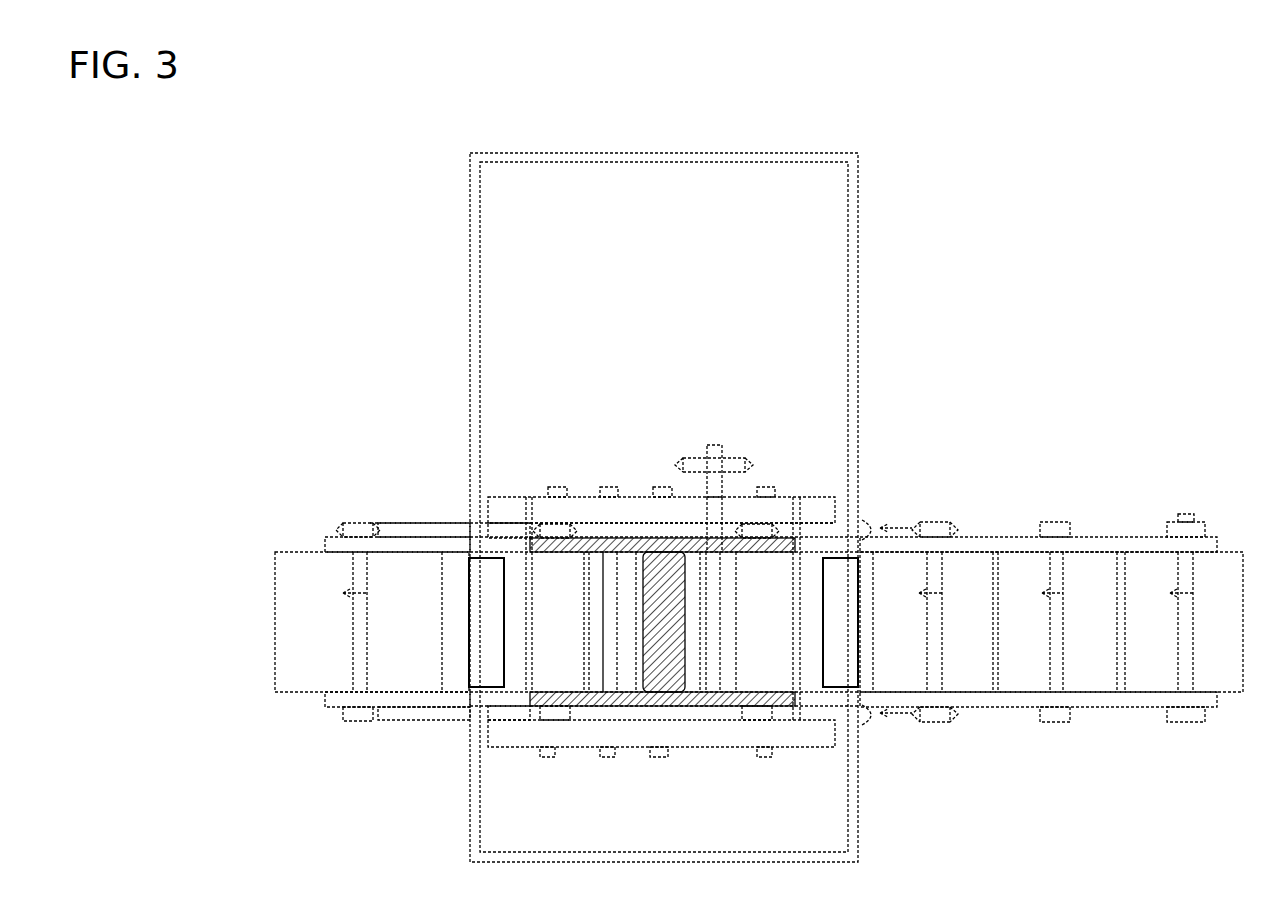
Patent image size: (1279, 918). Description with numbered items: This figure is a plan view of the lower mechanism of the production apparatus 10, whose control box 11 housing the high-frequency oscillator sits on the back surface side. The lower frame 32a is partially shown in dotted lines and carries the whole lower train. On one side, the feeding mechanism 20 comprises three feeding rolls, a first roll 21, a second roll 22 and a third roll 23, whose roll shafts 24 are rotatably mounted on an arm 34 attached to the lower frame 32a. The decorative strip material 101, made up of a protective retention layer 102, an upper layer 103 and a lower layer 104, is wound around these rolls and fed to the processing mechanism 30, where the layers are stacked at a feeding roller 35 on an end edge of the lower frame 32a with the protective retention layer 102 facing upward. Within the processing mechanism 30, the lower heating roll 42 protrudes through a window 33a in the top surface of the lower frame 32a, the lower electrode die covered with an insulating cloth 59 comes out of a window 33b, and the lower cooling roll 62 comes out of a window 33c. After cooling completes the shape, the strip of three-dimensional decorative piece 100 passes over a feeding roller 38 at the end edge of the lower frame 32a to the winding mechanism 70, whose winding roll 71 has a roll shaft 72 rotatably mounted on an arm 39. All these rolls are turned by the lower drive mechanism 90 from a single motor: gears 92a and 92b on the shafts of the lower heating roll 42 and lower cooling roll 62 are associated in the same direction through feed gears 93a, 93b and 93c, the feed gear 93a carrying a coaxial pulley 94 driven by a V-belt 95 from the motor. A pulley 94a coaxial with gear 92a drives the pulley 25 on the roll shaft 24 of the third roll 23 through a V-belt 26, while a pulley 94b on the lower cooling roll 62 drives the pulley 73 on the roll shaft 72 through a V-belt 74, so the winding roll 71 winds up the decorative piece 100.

The production apparatus 10 is at (950, 288).
The control box 11 is at (838, 308).
The feeding mechanism 20 is at (1003, 385).
The first roll 21 is at (1190, 590).
The second roll 22 is at (1060, 590).
The third roll 23 is at (932, 590).
The roll shaft 24 is at (932, 525).
The pulley 25 is at (950, 528).
The V-belt 26 is at (903, 528).
The processing mechanism 30 is at (867, 775).
The lower frame 32a is at (470, 806).
The window 33a is at (797, 567).
The window 33b is at (700, 715).
The window 33c is at (528, 700).
The arm 34 is at (1027, 548).
The feeding roller 35 is at (843, 590).
The feeding roller 38 is at (487, 580).
The arm 39 is at (360, 548).
The lower heating roll 42 is at (780, 655).
The insulating cloth 59 is at (665, 680).
The lower cooling roll 62 is at (547, 582).
The winding mechanism 70 is at (335, 465).
The winding roll 71 is at (357, 648).
The roll shaft 72 is at (353, 528).
The pulley 73 is at (345, 532).
The V-belt 74 is at (410, 548).
The lower drive mechanism 90 is at (622, 358).
The gear 92a is at (790, 540).
The gear 92b is at (540, 535).
The feed gear 93a is at (722, 540).
The feed gear 93b is at (646, 540).
The feed gear 93c is at (600, 535).
The pulley 94 is at (738, 460).
The pulley 94a is at (775, 528).
The pulley 94b is at (561, 530).
The V-belt 95 is at (700, 458).
The strip of three-dimensional decorative piece 100 is at (445, 688).
The decorative strip material 101 is at (855, 720).
The protective retention layer 102 is at (1222, 685).
The upper layer 103 is at (1087, 685).
The lower layer 104 is at (958, 690).